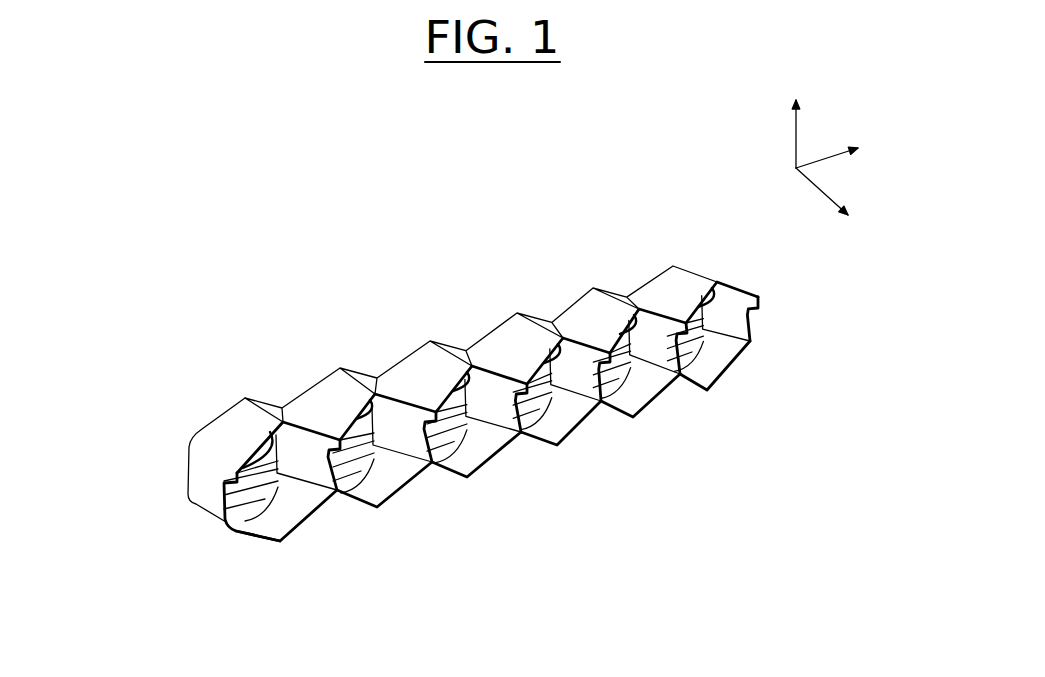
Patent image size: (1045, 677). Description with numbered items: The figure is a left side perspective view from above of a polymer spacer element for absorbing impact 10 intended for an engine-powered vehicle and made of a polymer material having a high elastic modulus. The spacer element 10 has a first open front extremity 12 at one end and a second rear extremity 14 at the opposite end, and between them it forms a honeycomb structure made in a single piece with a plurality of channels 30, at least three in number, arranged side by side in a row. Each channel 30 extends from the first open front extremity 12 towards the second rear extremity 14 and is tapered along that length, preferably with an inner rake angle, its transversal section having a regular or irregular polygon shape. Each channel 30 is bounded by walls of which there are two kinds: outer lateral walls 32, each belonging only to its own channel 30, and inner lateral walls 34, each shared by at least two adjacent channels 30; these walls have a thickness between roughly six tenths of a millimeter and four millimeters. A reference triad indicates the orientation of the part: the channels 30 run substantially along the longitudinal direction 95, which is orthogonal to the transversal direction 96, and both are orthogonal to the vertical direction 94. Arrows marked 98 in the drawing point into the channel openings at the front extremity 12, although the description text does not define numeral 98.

The polymer spacer element for absorbing impact 10 is at (213, 237).
The first open front extremity 12 is at (233, 528).
The second rear extremity 14 is at (188, 501).
The channel 30 is at (797, 358).
The outer lateral wall 32 is at (714, 382).
The inner lateral wall 34 is at (703, 398).
The opening 98 is at (293, 537).
The vertical direction 94 is at (815, 128).
The longitudinal direction 95 is at (841, 206).
The transversal direction 96 is at (849, 145).